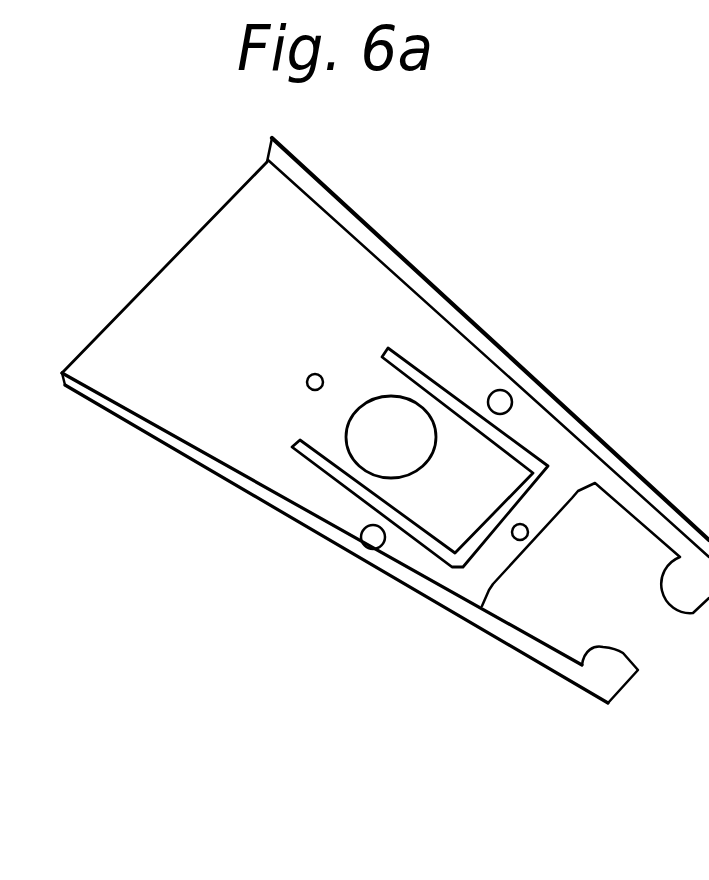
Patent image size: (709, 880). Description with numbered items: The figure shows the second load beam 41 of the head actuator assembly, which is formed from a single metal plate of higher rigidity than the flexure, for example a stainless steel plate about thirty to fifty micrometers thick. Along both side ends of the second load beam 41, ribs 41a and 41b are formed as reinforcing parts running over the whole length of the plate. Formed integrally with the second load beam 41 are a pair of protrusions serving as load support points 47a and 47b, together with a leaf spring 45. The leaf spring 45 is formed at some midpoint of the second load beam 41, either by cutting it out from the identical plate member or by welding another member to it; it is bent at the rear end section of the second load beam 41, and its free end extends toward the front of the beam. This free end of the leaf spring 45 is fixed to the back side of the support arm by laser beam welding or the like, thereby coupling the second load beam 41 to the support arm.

The second load beam 41 is at (370, 290).
The rib 41a is at (443, 313).
The rib 41b is at (312, 523).
The leaf spring 45 is at (445, 525).
The load support point 47a is at (500, 402).
The load support point 47b is at (370, 548).